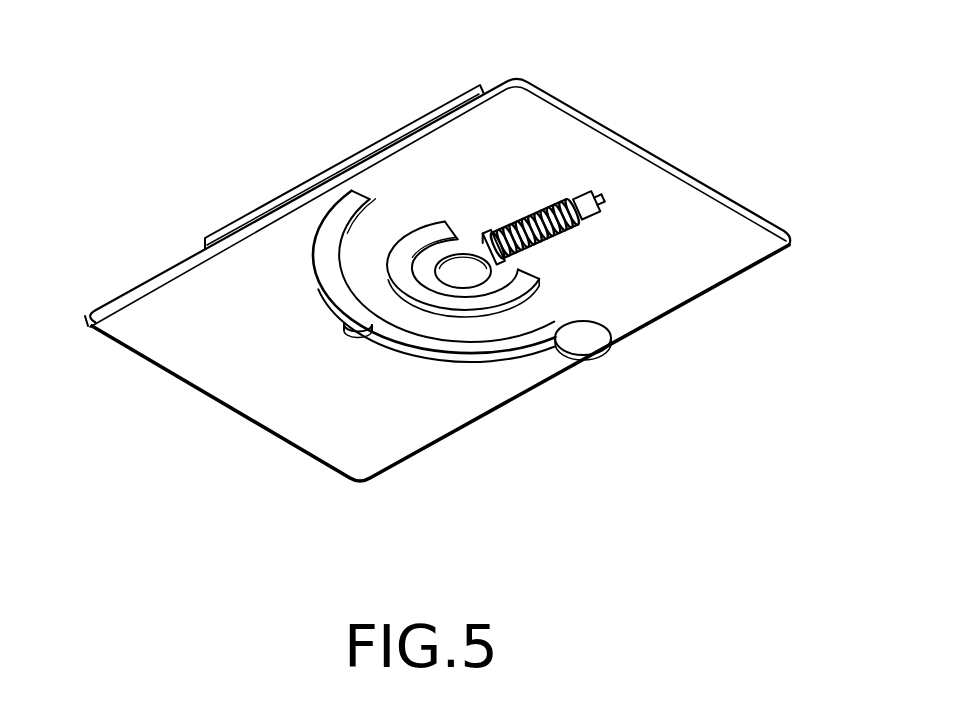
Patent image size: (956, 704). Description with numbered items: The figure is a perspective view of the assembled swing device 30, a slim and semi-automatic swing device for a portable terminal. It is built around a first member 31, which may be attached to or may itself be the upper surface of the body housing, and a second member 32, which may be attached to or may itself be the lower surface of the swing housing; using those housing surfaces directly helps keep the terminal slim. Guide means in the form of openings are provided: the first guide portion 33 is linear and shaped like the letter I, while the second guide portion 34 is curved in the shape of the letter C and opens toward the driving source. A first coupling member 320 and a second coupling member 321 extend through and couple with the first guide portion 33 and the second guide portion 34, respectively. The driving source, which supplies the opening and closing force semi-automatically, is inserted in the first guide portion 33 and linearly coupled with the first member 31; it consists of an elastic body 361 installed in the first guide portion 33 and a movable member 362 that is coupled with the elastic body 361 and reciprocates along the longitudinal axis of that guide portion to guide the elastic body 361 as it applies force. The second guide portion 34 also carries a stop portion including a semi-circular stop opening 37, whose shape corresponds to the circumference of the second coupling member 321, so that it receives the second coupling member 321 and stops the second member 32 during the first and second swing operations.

The swing device 30 is at (106, 60).
The first member 31 is at (446, 280).
The second member 32 is at (344, 167).
The first coupling member 320 is at (467, 275).
The second coupling member 321 is at (585, 340).
The first guide portion 33 is at (530, 205).
The second guide portion 34 is at (335, 282).
The elastic body 361 is at (590, 202).
The movable member 362 is at (481, 241).
The stop opening 37 is at (360, 333).